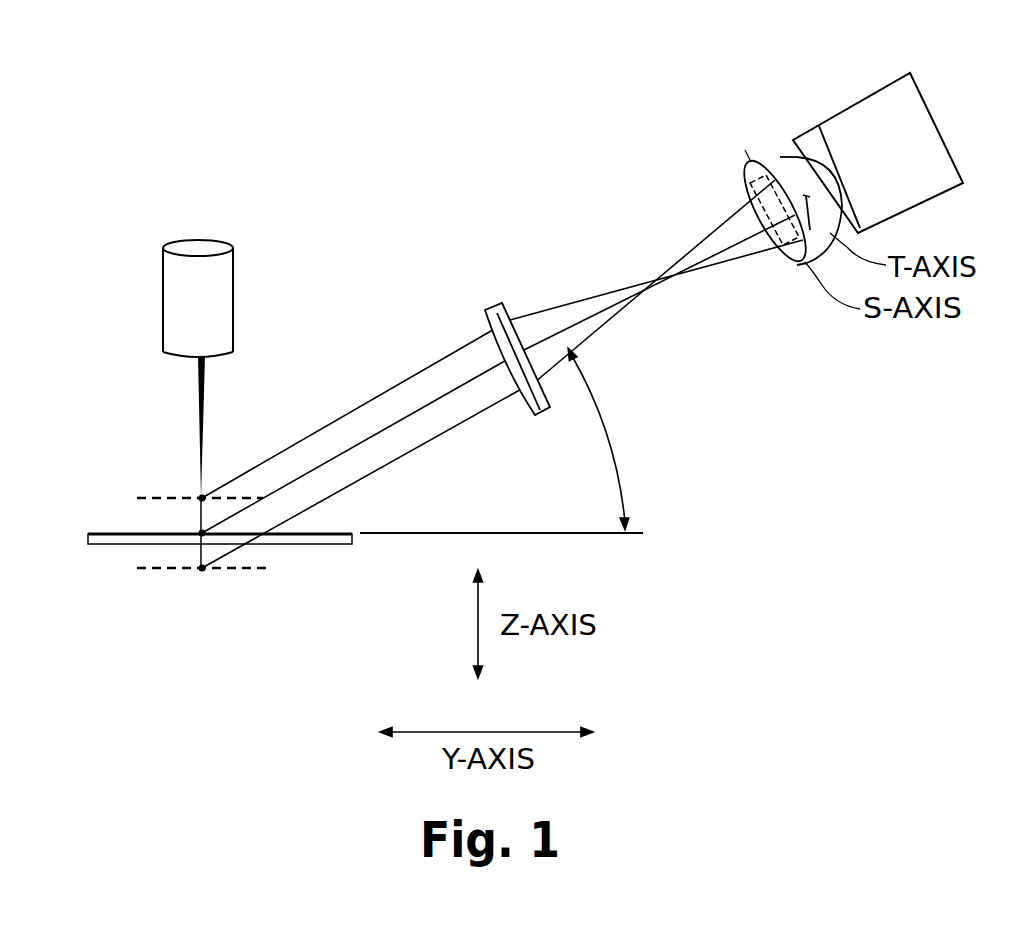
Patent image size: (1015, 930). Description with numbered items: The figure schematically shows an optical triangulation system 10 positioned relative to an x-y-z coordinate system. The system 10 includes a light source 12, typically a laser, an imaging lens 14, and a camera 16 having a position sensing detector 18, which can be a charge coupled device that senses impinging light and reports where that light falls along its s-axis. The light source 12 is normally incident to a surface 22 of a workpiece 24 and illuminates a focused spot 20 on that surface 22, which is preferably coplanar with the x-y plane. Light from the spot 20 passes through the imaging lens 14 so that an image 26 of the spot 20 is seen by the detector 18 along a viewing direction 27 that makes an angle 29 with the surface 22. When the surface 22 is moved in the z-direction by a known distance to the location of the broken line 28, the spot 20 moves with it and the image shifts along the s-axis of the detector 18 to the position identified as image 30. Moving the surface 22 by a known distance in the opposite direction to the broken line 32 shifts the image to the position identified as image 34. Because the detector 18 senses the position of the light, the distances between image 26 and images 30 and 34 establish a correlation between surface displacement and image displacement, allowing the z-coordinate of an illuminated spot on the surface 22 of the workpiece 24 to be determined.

The optical triangulation system 10 is at (873, 588).
The light source 12 is at (227, 287).
The imaging lens 14 is at (498, 305).
The camera 16 is at (912, 117).
The position sensing detector 18 is at (773, 160).
The focused spot 20 is at (202, 533).
The surface 22 is at (333, 536).
The workpiece 24 is at (104, 552).
The image 26 is at (752, 208).
The viewing direction 27 is at (357, 446).
The broken line 28 is at (138, 497).
The angle 29 is at (612, 442).
The image 30 is at (789, 252).
The broken line 32 is at (263, 571).
The image 34 is at (763, 183).